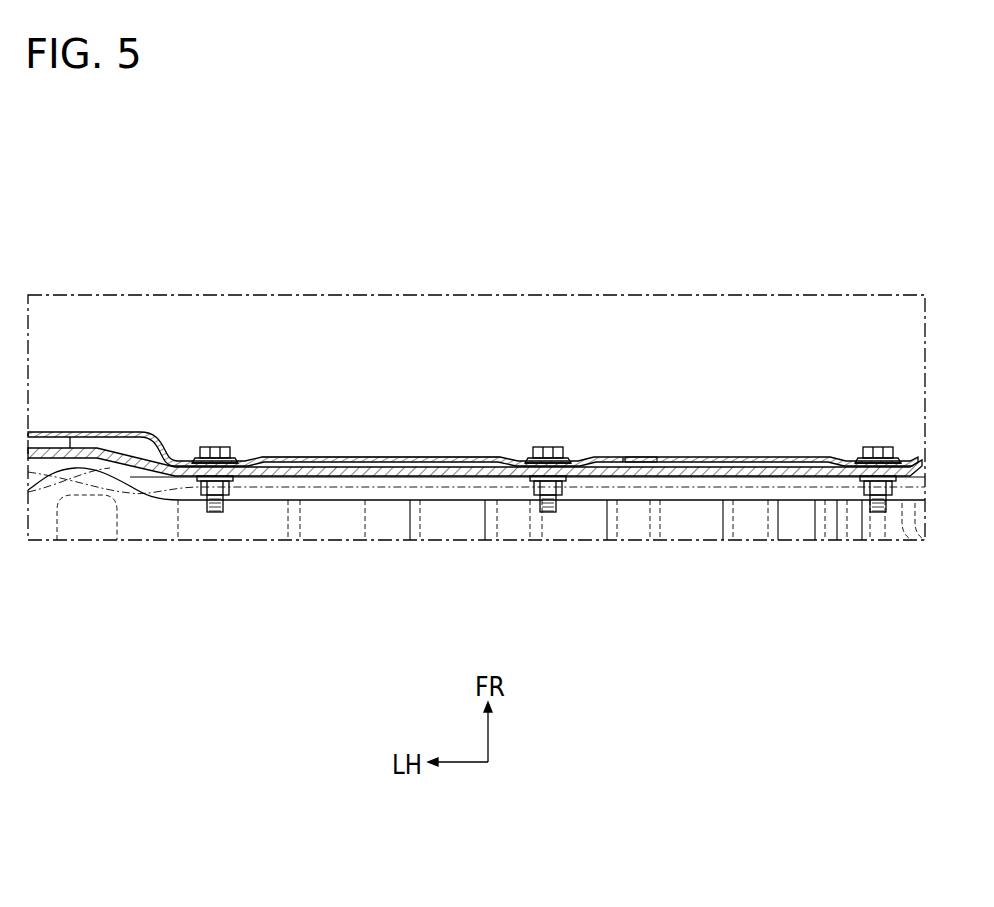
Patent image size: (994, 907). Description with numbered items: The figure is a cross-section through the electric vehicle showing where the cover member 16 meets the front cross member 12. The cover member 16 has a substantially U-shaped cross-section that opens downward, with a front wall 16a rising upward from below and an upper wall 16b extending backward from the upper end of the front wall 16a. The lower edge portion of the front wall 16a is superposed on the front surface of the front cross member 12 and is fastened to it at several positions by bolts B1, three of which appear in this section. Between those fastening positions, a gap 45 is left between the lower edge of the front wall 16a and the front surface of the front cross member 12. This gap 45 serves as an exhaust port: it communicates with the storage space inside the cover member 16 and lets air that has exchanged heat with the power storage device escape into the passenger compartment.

The gap 45 is at (127, 448).
The cover member 16 is at (436, 447).
The front wall 16a is at (333, 457).
The upper wall 16b is at (250, 523).
The front cross member 12 is at (527, 562).
The bolt B1 is at (215, 447).